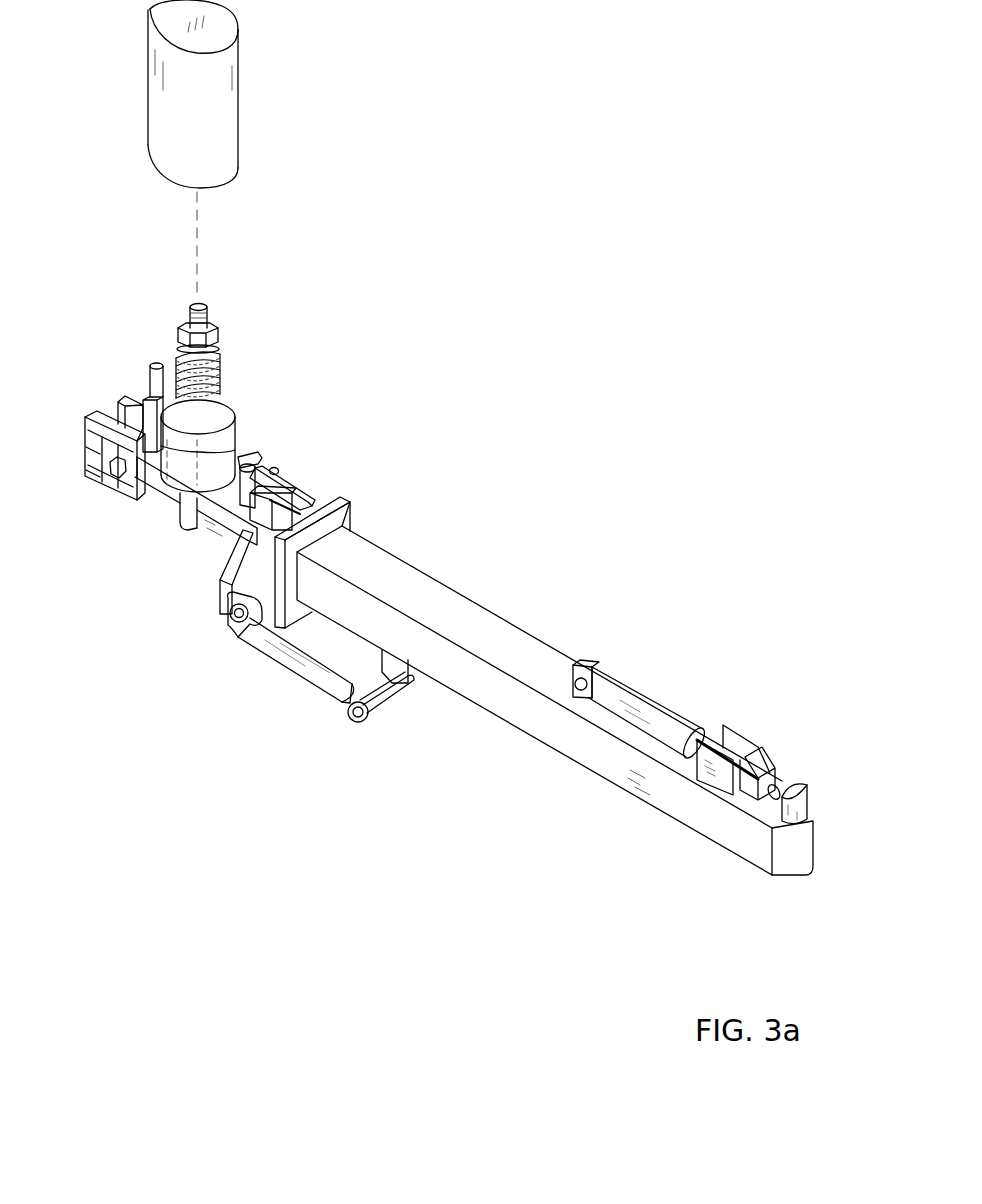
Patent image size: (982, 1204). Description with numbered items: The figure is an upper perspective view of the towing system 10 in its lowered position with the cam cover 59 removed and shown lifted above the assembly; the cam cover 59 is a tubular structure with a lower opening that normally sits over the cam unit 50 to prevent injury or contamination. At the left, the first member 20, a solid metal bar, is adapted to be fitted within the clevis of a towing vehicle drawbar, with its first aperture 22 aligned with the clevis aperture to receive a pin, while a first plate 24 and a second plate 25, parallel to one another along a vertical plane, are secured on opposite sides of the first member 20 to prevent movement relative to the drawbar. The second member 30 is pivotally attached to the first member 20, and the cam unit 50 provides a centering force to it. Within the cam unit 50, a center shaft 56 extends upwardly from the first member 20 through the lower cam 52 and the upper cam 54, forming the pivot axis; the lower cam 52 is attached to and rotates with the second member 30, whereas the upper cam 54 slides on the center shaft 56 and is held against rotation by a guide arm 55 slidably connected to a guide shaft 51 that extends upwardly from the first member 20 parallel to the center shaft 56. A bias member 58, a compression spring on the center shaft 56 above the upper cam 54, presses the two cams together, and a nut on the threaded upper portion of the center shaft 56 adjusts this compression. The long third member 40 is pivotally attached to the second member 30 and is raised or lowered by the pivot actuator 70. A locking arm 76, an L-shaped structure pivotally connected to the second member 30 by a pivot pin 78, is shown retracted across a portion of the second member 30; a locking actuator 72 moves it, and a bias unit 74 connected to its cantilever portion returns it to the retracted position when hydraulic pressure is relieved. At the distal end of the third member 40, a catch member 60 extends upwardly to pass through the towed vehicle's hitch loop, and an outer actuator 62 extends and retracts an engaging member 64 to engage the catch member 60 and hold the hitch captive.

The towing system 10 is at (597, 292).
The first member 20 is at (152, 492).
The first aperture 22 is at (100, 405).
The first plate 24 is at (78, 428).
The second plate 25 is at (118, 396).
The second member 30 is at (205, 530).
The third member 40 is at (470, 622).
The cam unit 50 is at (215, 314).
The guide shaft 51 is at (154, 360).
The lower cam 52 is at (240, 460).
The upper cam 54 is at (236, 418).
The guide arm 55 is at (140, 392).
The center shaft 56 is at (198, 302).
The bias member 58 is at (220, 356).
The cam cover 59 is at (238, 112).
The catch member 60 is at (804, 783).
The outer actuator 62 is at (623, 683).
The engaging member 64 is at (765, 803).
The pivot actuator 70 is at (290, 675).
The locking actuator 72 is at (250, 528).
The bias unit 74 is at (258, 460).
The locking arm 76 is at (322, 498).
The pivot pin 78 is at (288, 468).